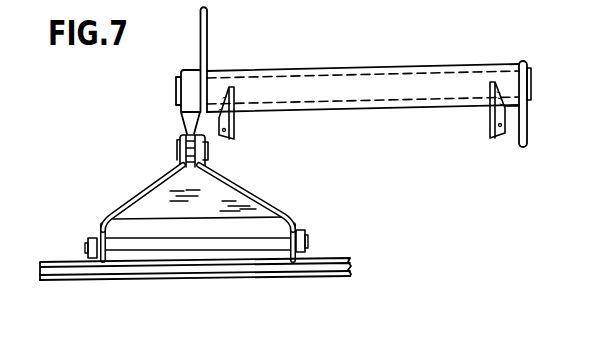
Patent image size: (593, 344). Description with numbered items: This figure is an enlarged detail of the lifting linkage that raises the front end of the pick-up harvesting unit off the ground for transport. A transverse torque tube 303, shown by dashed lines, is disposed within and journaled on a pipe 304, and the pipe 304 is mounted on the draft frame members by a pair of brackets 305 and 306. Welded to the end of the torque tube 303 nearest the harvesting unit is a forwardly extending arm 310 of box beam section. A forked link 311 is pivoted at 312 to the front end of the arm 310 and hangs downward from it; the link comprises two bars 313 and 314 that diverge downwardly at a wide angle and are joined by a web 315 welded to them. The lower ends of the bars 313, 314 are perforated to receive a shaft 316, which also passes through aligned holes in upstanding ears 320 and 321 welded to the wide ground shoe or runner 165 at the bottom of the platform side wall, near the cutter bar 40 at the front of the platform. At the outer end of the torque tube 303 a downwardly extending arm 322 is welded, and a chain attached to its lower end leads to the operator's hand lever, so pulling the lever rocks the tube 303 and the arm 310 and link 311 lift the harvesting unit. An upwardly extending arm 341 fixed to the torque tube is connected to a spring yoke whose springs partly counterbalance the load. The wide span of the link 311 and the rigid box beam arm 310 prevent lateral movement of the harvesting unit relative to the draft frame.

The upwardly extending arm 341 is at (207, 48).
The transverse torque tube 303 is at (330, 72).
The pipe 304 is at (413, 66).
The forwardly extending arm 310 is at (189, 112).
The bracket 305 is at (237, 123).
The bracket 306 is at (489, 121).
The downwardly extending arm 322 is at (528, 125).
The pivot 312 is at (208, 155).
The web 315 is at (182, 189).
The bar 313 is at (147, 195).
The forked link 311 is at (256, 191).
The bar 314 is at (269, 208).
The upstanding ear 320 is at (97, 232).
The upstanding ear 321 is at (300, 232).
The shaft 316 is at (197, 243).
The cutter bar 40 is at (143, 269).
The ground shoe 165 is at (197, 275).